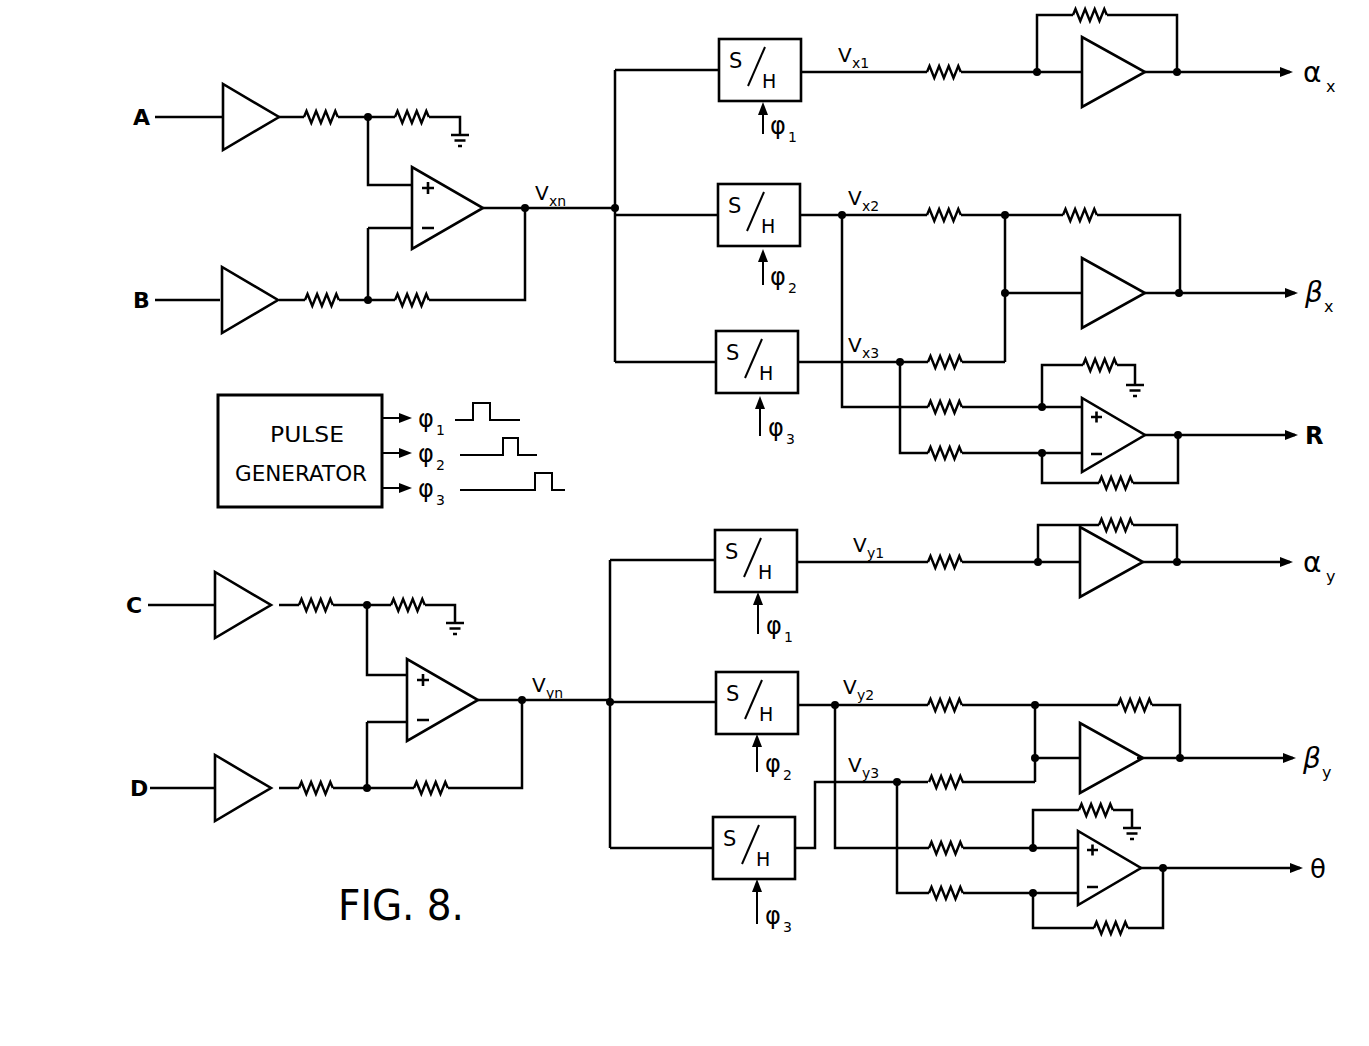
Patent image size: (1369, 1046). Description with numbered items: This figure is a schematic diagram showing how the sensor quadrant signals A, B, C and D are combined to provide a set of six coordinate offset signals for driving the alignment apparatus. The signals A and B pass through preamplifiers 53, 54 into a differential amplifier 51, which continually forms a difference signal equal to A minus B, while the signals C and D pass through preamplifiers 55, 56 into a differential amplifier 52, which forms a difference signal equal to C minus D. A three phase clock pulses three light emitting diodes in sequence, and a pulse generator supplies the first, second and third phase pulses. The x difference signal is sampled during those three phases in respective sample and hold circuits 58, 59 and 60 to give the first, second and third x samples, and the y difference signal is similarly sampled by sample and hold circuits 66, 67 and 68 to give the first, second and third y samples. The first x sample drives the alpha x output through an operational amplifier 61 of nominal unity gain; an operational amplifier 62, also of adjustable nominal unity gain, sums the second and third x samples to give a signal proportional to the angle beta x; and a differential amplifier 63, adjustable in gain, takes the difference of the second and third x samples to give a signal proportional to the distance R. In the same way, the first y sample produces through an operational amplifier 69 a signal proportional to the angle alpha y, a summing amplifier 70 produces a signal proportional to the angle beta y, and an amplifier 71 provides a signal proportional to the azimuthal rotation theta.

The differential amplifier 51 is at (452, 183).
The differential amplifier 52 is at (450, 685).
The preamplifier 53 is at (255, 103).
The preamplifier 54 is at (247, 292).
The preamplifier 55 is at (248, 585).
The preamplifier 56 is at (250, 775).
The sample and hold circuit 58 is at (781, 40).
The sample and hold circuit 59 is at (729, 184).
The sample and hold circuit 60 is at (733, 331).
The operational amplifier 61 is at (1116, 86).
The operational amplifier 62 is at (1115, 310).
The differential amplifier 63 is at (1115, 448).
The sample and hold circuit 66 is at (752, 530).
The sample and hold circuit 67 is at (716, 684).
The sample and hold circuit 68 is at (719, 817).
The operational amplifier 69 is at (1114, 578).
The summing amplifier 70 is at (1112, 775).
The amplifier 71 is at (1108, 886).